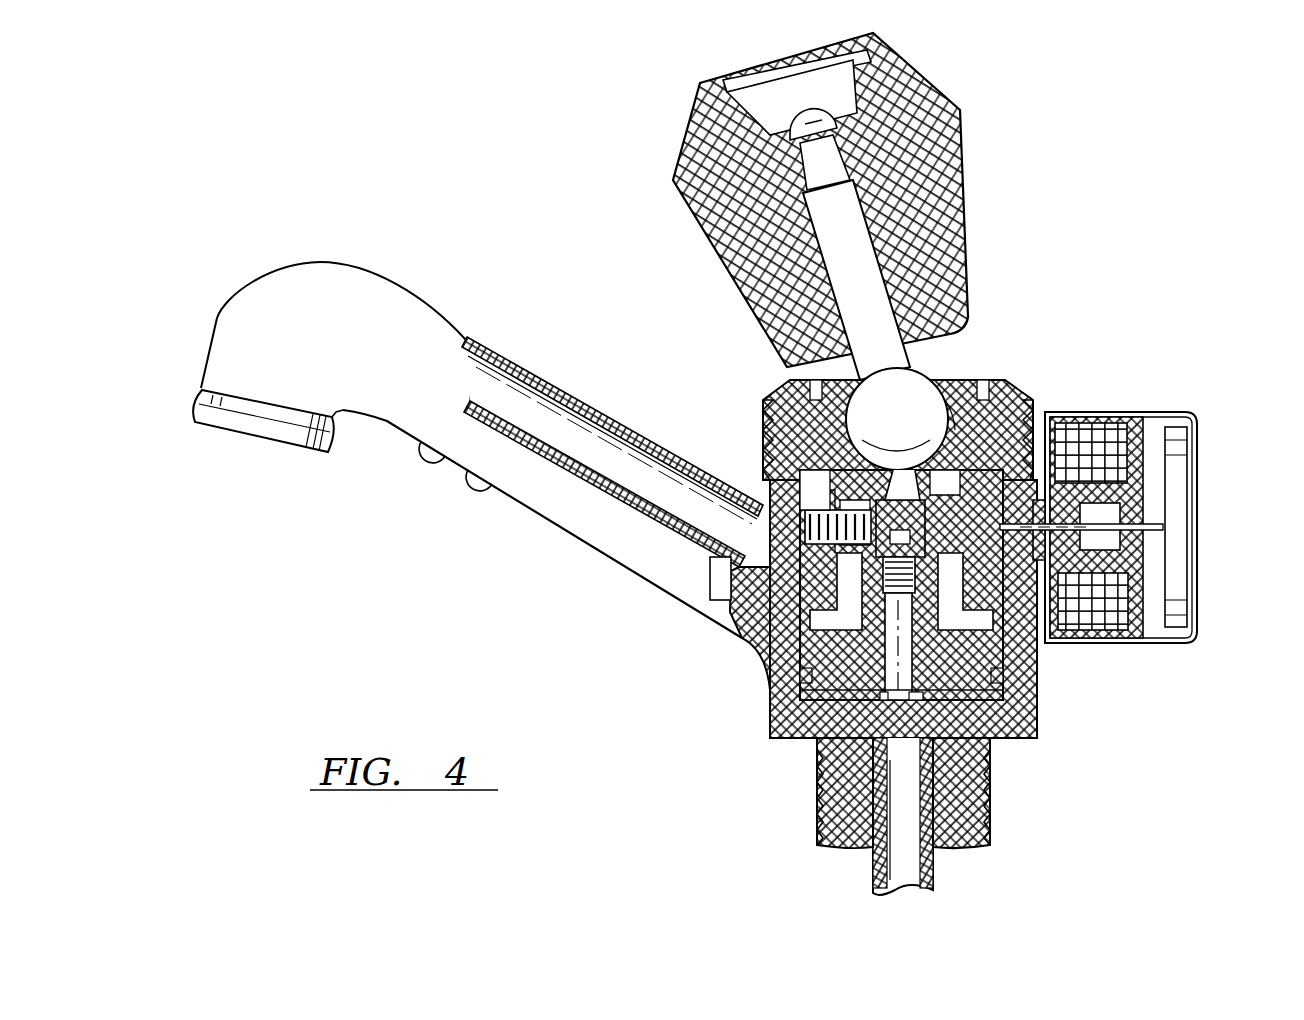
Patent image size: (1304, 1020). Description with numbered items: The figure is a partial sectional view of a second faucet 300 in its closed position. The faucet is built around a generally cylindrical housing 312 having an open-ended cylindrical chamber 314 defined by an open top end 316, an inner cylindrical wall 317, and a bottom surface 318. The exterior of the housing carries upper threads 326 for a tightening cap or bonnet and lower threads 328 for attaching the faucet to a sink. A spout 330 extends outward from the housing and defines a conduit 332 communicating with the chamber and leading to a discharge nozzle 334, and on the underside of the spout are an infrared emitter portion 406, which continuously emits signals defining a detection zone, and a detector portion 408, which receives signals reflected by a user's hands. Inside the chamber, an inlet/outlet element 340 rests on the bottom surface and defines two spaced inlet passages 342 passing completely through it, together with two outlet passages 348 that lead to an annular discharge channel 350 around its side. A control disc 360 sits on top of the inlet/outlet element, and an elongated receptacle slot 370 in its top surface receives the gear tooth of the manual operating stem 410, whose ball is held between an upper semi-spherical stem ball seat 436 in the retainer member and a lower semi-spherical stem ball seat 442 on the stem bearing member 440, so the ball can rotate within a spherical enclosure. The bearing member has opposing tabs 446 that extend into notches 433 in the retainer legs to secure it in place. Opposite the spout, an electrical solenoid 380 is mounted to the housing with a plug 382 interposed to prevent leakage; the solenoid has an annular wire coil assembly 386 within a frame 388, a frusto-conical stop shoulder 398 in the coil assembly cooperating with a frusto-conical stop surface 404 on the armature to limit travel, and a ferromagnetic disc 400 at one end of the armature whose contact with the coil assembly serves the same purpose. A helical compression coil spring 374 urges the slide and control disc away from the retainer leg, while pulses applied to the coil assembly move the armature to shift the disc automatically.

The faucet 300 is at (587, 226).
The housing 312 is at (990, 845).
The chamber 314 is at (807, 697).
The open top end 316 is at (790, 395).
The inner cylindrical wall 317 is at (795, 415).
The bottom surface 318 is at (837, 700).
The upper threads 326 is at (800, 440).
The lower threads 328 is at (818, 833).
The spout 330 is at (347, 261).
The conduit 332 is at (524, 388).
The discharge nozzle 334 is at (293, 450).
The inlet/outlet element 340 is at (917, 673).
The inlet passages 342 is at (912, 676).
The outlet passages 348 is at (787, 653).
The discharge channel 350 is at (1010, 650).
The control disc 360 is at (810, 598).
The receptacle slot 370 is at (935, 480).
The helical compression coil spring 374 is at (805, 536).
The solenoid 380 is at (1168, 410).
The plug 382 is at (1038, 493).
The coil assembly 386 is at (1143, 625).
The frame 388 is at (1140, 410).
The stop shoulder 398 is at (1090, 522).
The ferromagnetic disc 400 is at (1186, 607).
The stop surface 404 is at (1115, 532).
The emitter portion 406 is at (438, 458).
The detector portion 408 is at (482, 486).
The operating stem 410 is at (965, 106).
The notch 433 is at (815, 495).
The upper stem ball seat 436 is at (848, 402).
The stem bearing member 440 is at (975, 435).
The lower stem ball seat 442 is at (896, 433).
The tabs 446 is at (800, 498).